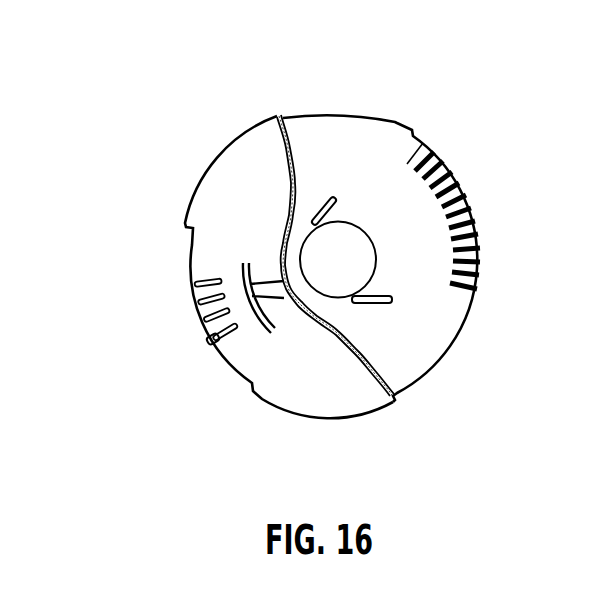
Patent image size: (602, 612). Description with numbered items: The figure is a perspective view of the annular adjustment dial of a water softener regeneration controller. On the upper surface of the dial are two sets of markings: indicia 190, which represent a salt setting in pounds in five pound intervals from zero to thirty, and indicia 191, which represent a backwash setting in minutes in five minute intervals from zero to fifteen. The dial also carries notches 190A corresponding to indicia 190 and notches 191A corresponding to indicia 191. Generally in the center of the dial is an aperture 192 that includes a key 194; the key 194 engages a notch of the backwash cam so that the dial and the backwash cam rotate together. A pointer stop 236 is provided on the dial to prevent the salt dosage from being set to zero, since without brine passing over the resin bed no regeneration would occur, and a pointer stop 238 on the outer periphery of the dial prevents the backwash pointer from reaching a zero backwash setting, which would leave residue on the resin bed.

The indicia 190 is at (343, 150).
The notches 190A is at (432, 147).
The indicia 191 is at (223, 275).
The notches 191A is at (200, 308).
The aperture 192 is at (340, 273).
The key 194 is at (310, 263).
The pointer stop 236 is at (377, 307).
The pointer stop 238 is at (207, 343).